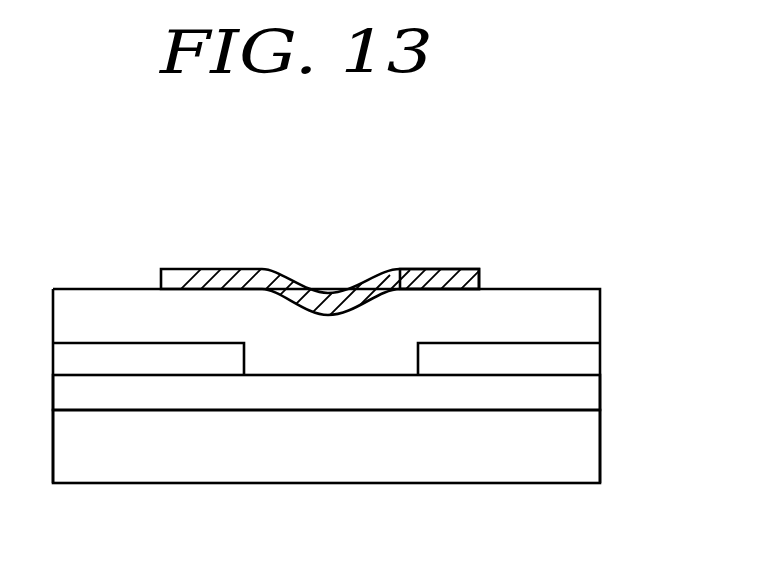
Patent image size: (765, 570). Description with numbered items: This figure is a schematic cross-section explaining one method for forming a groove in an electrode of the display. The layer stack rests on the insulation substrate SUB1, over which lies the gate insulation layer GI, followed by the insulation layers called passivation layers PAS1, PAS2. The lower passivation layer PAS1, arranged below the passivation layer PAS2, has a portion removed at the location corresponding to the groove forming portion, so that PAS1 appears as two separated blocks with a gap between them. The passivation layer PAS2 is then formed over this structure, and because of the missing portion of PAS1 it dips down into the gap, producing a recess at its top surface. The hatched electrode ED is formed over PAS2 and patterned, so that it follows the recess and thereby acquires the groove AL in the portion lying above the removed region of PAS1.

The groove AL is at (326, 270).
The electrode ED is at (430, 278).
The passivation layer PAS2 is at (582, 319).
The passivation layer PAS1 is at (446, 362).
The gate insulation layer GI is at (582, 393).
The insulation substrate SUB1 is at (580, 450).